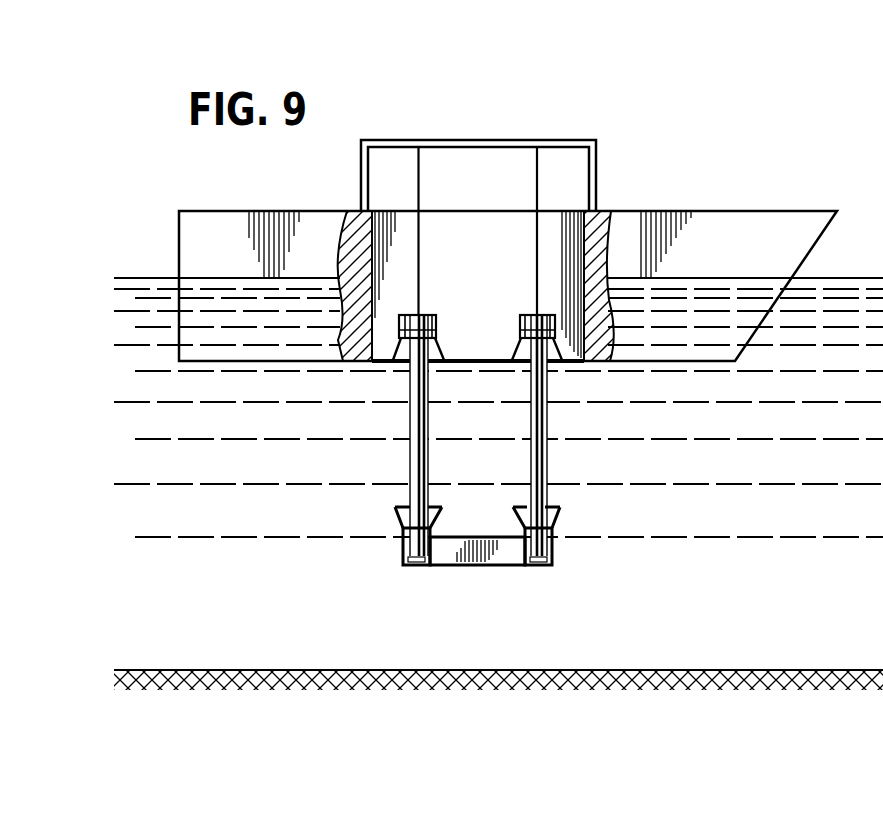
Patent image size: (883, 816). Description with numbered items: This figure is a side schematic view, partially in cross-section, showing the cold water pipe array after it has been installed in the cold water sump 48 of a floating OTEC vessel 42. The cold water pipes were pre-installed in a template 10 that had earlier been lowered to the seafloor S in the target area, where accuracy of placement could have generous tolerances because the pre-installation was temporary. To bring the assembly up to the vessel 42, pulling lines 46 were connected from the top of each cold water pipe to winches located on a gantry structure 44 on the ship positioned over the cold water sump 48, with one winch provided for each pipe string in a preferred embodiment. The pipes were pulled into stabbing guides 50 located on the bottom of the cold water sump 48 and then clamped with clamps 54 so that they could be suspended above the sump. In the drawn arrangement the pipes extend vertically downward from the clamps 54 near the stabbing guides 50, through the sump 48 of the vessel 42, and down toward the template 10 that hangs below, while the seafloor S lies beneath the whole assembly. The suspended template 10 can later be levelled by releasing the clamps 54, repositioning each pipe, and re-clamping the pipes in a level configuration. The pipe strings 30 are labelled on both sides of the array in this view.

The template 10 is at (553, 548).
The anchor rods 30 is at (402, 463).
The floating OTEC vessel 42 is at (720, 211).
The gantry structure 44 is at (561, 143).
The pulling lines 46 is at (537, 276).
The cold water sump 48 is at (496, 351).
The stabbing guides 50 is at (396, 352).
The clamps 54 is at (434, 314).
The seafloor S is at (290, 670).